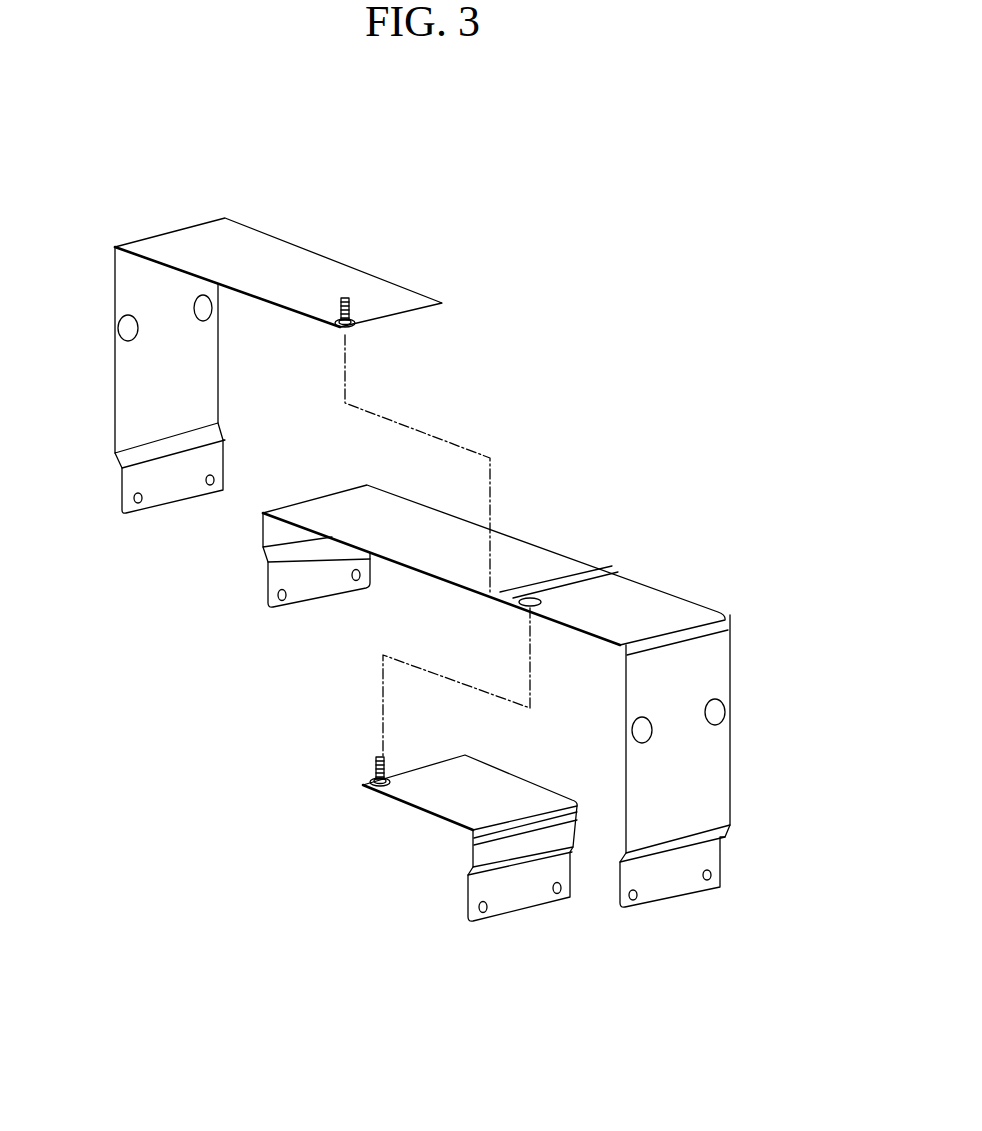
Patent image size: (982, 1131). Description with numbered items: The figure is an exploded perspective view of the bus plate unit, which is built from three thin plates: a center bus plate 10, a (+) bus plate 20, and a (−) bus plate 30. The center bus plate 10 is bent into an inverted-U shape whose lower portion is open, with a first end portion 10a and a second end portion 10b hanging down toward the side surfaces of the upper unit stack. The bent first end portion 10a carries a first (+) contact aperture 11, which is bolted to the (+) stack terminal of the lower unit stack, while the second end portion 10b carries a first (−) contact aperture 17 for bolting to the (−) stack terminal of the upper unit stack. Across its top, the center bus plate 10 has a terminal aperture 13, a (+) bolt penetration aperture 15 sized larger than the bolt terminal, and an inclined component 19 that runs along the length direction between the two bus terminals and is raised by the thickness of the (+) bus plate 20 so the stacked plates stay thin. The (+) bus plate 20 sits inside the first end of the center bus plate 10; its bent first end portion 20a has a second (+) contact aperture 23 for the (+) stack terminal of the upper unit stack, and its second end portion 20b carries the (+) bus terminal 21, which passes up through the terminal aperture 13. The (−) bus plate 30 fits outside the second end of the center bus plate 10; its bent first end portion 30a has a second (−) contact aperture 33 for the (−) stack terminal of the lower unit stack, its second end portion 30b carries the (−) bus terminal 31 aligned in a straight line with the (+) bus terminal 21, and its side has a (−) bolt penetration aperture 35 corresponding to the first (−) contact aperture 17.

The center bus plate 10 is at (508, 734).
The first end portion of the center bus plate 10a is at (712, 797).
The second end portion of the center bus plate 10b is at (283, 568).
The first (+) contact aperture 11 is at (709, 879).
The terminal aperture 13 is at (529, 598).
The (+) bolt penetration aperture 15 is at (716, 710).
The first (−) contact aperture 17 is at (284, 599).
The inclined component 19 is at (577, 578).
The (+) bus plate 20 is at (440, 870).
The first end portion of the (+) bus plate 20a is at (520, 900).
The second end portion of the (+) bus plate 20b is at (498, 792).
The (+) bus terminal 21 is at (372, 778).
The second (+) contact aperture 23 is at (486, 912).
The (−) bus plate 30 is at (271, 370).
The first end portion of the (−) bus plate 30a is at (148, 403).
The second end portion of the (−) bus plate 30b is at (388, 305).
The (−) bus terminal 31 is at (346, 300).
The second (−) contact aperture 33 is at (138, 502).
The (−) bolt penetration aperture 35 is at (133, 338).